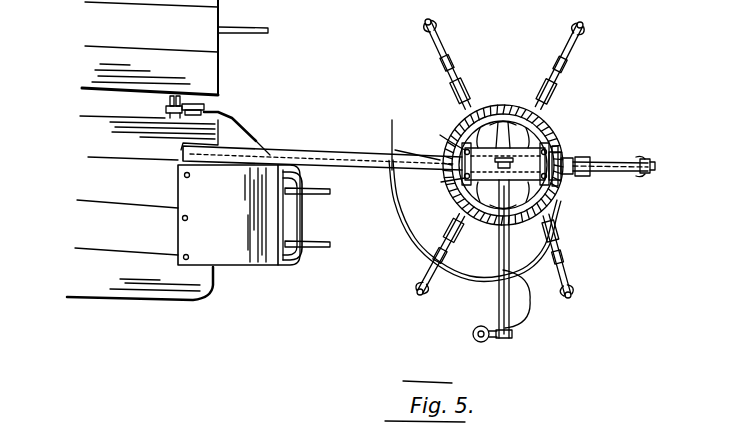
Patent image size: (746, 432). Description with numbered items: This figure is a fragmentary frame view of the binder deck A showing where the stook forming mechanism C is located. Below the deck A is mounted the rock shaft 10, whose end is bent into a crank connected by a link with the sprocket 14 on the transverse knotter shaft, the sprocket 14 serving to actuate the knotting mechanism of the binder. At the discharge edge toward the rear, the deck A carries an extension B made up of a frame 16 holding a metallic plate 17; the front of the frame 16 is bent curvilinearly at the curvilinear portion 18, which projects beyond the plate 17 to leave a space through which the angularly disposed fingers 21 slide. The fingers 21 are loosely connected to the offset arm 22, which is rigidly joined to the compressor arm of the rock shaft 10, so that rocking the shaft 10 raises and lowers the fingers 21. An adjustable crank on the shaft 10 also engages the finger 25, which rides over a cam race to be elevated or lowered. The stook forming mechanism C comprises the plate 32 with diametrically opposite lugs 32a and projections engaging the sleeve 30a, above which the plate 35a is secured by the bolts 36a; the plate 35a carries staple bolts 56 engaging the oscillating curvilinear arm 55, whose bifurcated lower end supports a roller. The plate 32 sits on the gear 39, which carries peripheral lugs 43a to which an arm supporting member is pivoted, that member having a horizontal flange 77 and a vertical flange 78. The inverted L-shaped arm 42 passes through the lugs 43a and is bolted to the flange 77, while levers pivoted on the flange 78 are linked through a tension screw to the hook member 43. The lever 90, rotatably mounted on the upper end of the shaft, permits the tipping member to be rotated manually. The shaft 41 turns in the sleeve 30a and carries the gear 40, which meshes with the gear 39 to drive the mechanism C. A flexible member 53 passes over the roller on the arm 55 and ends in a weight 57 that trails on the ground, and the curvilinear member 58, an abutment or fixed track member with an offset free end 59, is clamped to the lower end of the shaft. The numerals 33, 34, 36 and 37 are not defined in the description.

The binder deck A is at (140, 297).
The extension B is at (246, 270).
The stook forming mechanism C is at (555, 240).
The rock shaft 10 is at (165, 100).
The sprocket 14 is at (552, 118).
The frame 16 is at (272, 266).
The metallic plate 17 is at (178, 237).
The curvilinear portion 18 is at (302, 252).
The fingers 21 is at (320, 196).
The offset arm 22 is at (258, 137).
The finger 25 is at (258, 33).
The sleeve 30a is at (356, 152).
The plate 32 is at (506, 104).
The lugs 32a is at (595, 86).
The bearing 33 is at (462, 192).
The shaft 34 is at (570, 178).
The plate 35a is at (433, 238).
The housing 36 is at (477, 140).
The bolts 36a is at (410, 166).
The support 37 is at (462, 210).
The gear 39 is at (558, 202).
The gear 40 is at (600, 122).
The shaft 41 is at (624, 146).
The inverted L-shaped arm 42 is at (567, 50).
The hook member 43 is at (560, 292).
The peripheral lugs 43a is at (473, 88).
The flexible member 53 is at (528, 312).
The oscillating curvilinear arm 55 is at (512, 326).
The staple bolts 56 is at (533, 98).
The weight 57 is at (482, 343).
The curvilinear member 58 is at (457, 217).
The offset free end 59 is at (392, 118).
The horizontally disposed flange 77 is at (610, 160).
The vertically disposed flange 78 is at (452, 80).
The lever 90 is at (552, 214).